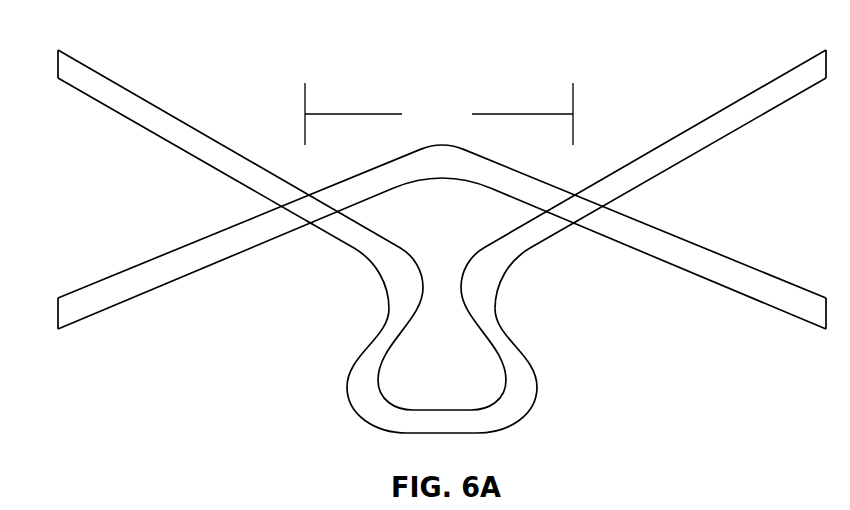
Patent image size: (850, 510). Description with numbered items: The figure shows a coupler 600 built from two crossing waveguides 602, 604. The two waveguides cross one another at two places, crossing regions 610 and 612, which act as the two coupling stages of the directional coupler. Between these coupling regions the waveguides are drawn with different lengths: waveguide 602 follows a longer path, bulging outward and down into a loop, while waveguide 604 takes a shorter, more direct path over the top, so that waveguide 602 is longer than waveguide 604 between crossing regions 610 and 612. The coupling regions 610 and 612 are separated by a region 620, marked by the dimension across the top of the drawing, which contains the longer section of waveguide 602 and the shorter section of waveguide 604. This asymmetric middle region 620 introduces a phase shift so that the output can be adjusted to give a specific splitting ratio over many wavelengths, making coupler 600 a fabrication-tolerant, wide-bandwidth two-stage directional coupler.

The coupler 600 is at (418, 234).
The waveguide 602 is at (78, 68).
The waveguide 604 is at (79, 310).
The crossing region 610 is at (310, 221).
The crossing region 612 is at (580, 211).
The region 620 is at (439, 114).